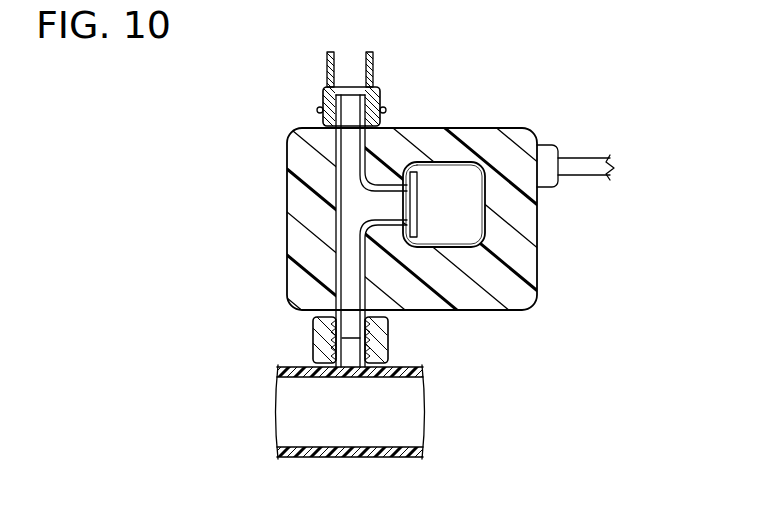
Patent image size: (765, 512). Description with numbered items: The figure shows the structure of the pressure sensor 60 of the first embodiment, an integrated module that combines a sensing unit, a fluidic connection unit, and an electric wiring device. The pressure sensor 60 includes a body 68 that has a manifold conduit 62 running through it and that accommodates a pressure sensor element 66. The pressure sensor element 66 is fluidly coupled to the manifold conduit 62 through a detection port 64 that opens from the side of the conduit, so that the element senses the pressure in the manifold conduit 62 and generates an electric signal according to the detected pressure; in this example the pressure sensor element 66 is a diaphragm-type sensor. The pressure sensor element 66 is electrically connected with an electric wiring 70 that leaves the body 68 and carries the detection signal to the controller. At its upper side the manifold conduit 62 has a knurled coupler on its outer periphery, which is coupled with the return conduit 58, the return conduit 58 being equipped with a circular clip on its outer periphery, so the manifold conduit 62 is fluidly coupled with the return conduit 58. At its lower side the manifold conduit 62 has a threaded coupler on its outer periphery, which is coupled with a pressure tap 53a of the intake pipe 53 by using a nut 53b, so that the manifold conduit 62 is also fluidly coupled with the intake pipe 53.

The intake pipe 53 is at (368, 450).
The pressure tap 53a is at (325, 342).
The nut 53b is at (385, 340).
The return conduit 58 is at (373, 62).
The pressure sensor 60 is at (542, 72).
The manifold conduit 62 is at (350, 203).
The detection port 64 is at (385, 205).
The pressure sensor element 66 is at (423, 178).
The body 68 is at (523, 226).
The electric wiring 70 is at (585, 155).